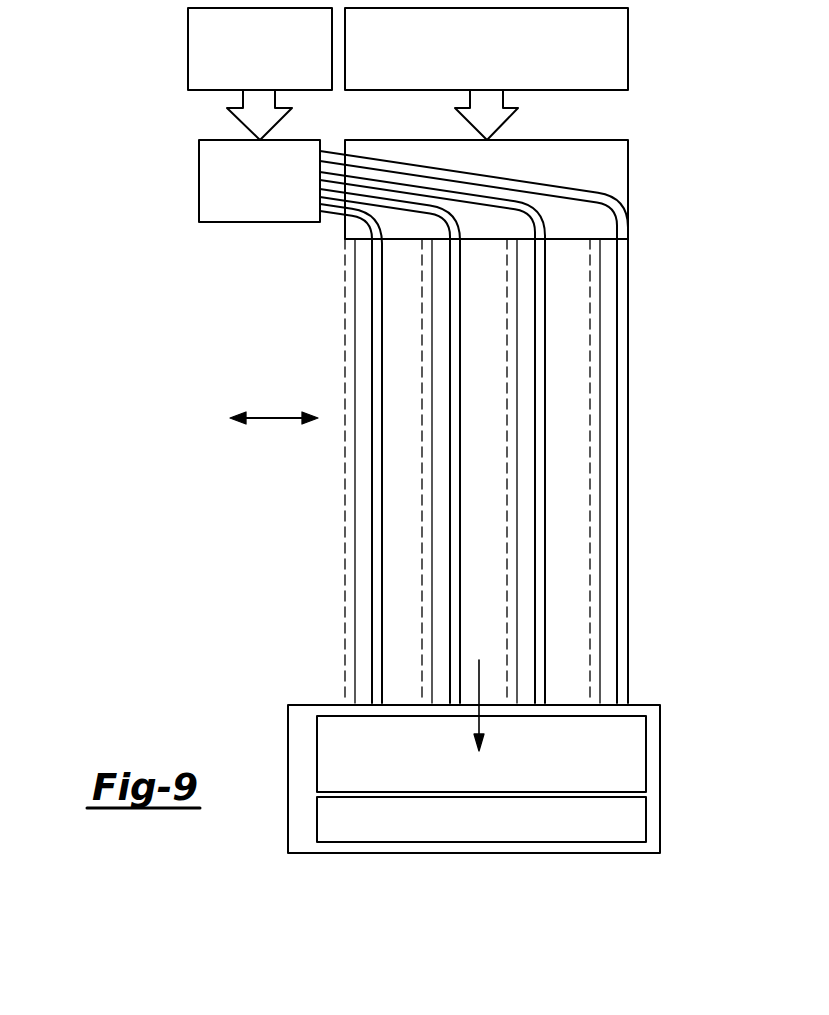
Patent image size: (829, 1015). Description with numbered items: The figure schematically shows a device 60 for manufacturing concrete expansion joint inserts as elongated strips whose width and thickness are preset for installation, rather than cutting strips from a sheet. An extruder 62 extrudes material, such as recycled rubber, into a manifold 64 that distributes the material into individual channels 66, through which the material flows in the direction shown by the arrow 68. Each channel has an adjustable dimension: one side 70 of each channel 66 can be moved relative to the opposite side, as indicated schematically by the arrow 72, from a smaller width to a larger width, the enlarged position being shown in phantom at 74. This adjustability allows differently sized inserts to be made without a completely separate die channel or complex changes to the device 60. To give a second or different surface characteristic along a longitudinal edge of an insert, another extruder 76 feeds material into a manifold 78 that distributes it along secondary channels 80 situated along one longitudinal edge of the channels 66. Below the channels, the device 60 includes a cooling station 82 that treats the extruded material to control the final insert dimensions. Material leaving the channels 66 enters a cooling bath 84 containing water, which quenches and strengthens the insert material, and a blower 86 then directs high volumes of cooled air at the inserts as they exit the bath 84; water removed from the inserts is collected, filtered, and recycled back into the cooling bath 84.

The device 60 is at (700, 156).
The extruder 62 is at (628, 50).
The manifold 64 is at (603, 153).
The channels 66 is at (363, 625).
The arrow 68 is at (478, 680).
The side of channel 70 is at (355, 557).
The arrow 72 is at (275, 416).
The phantom position of channel side 74 is at (345, 604).
The extruder 76 is at (188, 52).
The manifold 78 is at (199, 183).
The secondary channels 80 is at (620, 305).
The cooling station 82 is at (660, 724).
The cooling bath 84 is at (631, 752).
The blower 86 is at (630, 817).